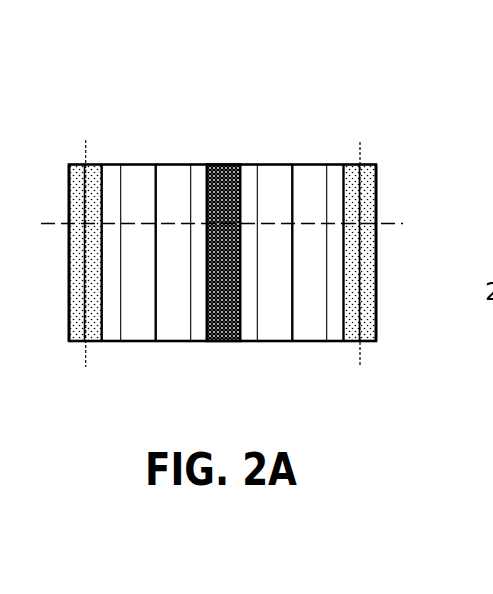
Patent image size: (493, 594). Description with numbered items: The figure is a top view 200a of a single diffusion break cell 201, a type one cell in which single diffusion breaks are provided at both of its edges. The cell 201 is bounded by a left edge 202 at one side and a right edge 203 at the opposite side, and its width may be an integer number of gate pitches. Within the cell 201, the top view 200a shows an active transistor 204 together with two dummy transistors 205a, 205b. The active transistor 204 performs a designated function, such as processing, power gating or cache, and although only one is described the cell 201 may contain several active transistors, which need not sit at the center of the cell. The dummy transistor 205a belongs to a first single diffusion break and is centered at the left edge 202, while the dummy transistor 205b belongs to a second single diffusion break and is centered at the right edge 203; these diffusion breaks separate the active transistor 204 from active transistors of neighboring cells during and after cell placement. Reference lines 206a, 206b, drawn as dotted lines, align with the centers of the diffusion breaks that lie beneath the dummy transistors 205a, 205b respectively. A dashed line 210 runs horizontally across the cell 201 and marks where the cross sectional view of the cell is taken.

The top view 200a is at (249, 28).
The cell 201 is at (140, 162).
The left edge 202 is at (83, 321).
The right edge 203 is at (360, 321).
The active transistor 204 is at (213, 162).
The dummy transistor 205a is at (75, 165).
The dummy transistor 205b is at (368, 165).
The reference line 206a is at (89, 152).
The reference line 206b is at (358, 160).
The line 210 is at (387, 224).